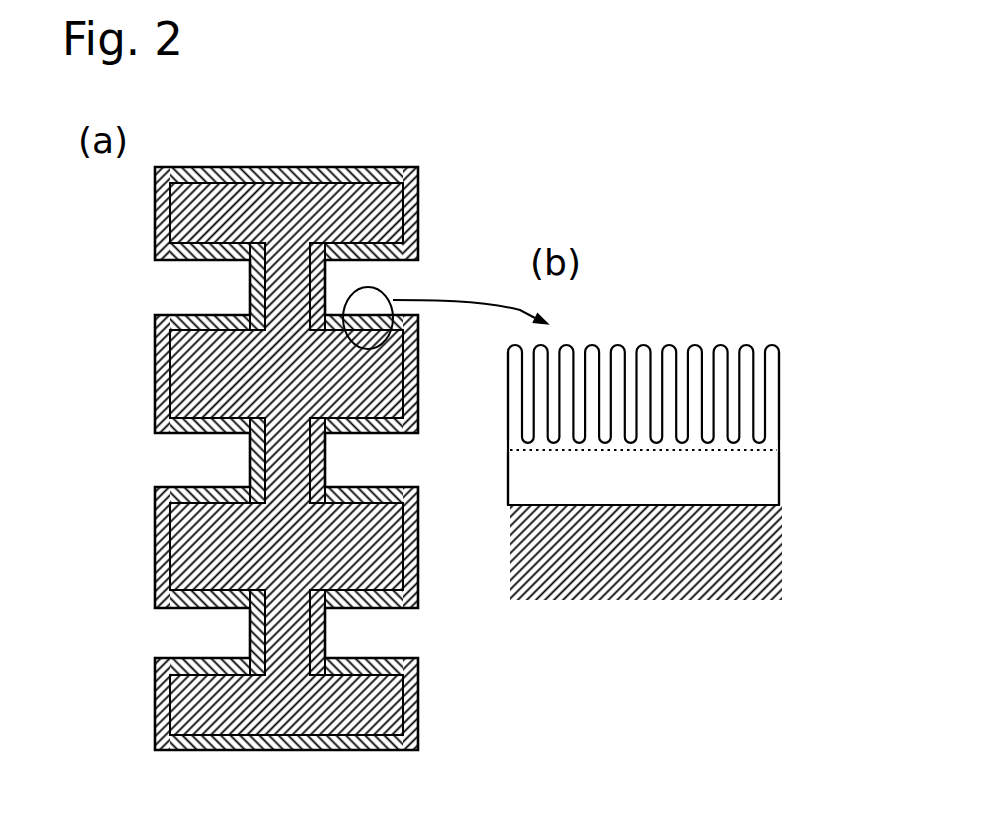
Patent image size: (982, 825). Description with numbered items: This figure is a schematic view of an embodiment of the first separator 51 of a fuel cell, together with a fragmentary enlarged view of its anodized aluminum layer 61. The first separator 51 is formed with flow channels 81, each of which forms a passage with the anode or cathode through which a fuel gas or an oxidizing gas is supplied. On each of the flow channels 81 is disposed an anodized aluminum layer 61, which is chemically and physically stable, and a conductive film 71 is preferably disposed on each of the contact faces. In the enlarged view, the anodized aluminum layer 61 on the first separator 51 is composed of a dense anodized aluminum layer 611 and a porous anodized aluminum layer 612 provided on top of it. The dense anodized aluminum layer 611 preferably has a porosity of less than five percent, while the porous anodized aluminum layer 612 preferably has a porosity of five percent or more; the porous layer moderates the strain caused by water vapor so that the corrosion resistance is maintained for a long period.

The first separator 51 is at (248, 553).
The anodized aluminum layer 61 is at (198, 302).
The conductive film 71 is at (147, 365).
The flow channel 81 is at (295, 460).
The dense anodized aluminum layer 611 is at (793, 452).
The porous anodized aluminum layer 612 is at (793, 345).